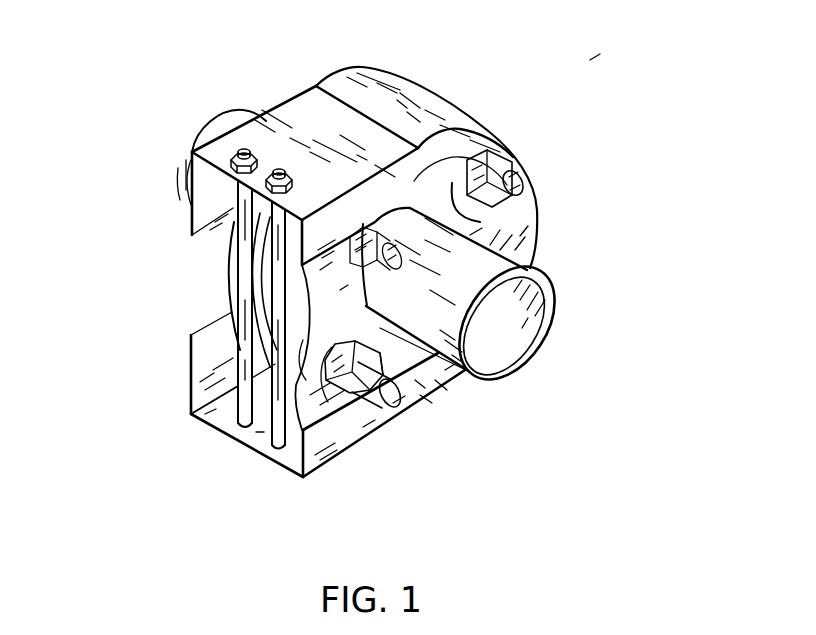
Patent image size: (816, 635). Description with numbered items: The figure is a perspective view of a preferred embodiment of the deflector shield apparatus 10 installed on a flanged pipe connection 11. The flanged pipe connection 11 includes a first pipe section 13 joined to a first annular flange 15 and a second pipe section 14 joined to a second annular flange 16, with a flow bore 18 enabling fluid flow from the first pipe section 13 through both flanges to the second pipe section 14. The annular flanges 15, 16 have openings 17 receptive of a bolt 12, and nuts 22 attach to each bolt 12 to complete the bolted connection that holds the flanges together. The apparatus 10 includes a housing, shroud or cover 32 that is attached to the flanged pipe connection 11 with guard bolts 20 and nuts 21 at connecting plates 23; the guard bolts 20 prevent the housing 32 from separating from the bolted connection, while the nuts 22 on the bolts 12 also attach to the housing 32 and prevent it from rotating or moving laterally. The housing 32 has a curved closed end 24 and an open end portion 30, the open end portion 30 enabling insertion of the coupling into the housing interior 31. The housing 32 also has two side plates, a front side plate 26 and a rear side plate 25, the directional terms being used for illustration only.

The deflector shield apparatus 10 is at (590, 60).
The flanged pipe connection 11 is at (447, 370).
The bolt 12 is at (522, 188).
The first pipe section 13 is at (218, 117).
The second pipe section 14 is at (553, 313).
The first annular flange 15 is at (228, 295).
The second annular flange 16 is at (354, 319).
The openings 17 is at (290, 428).
The flow bore 18 is at (183, 173).
The guard bolts 20 is at (233, 260).
The nuts 21 is at (230, 158).
The nuts 22 is at (510, 160).
The connecting plates 23 is at (307, 99).
The closed end 24 is at (417, 117).
The rear side plate 25 is at (188, 368).
The front side plate 26 is at (333, 448).
The open end portion 30 is at (213, 419).
The interior 31 is at (260, 432).
The housing 32 is at (414, 94).